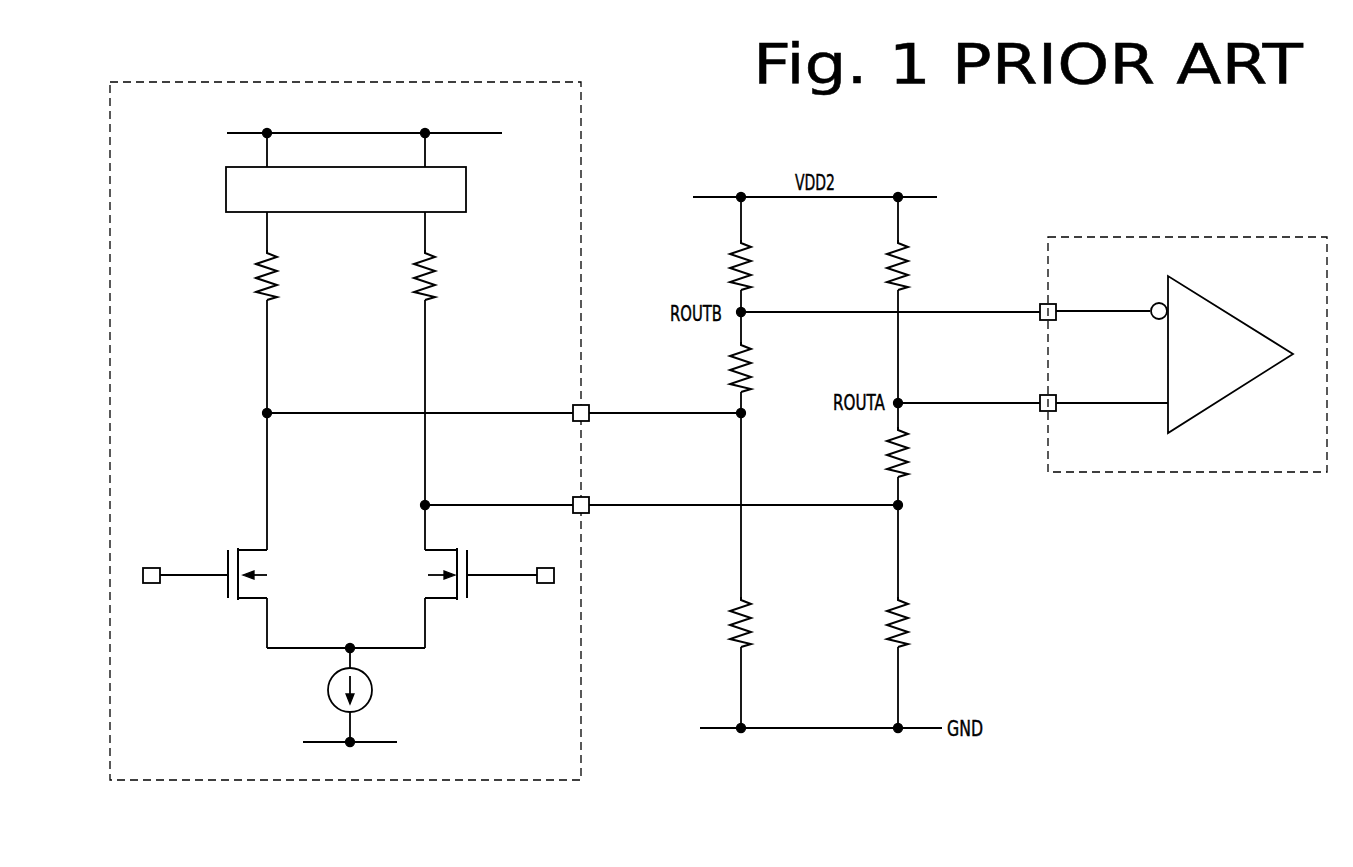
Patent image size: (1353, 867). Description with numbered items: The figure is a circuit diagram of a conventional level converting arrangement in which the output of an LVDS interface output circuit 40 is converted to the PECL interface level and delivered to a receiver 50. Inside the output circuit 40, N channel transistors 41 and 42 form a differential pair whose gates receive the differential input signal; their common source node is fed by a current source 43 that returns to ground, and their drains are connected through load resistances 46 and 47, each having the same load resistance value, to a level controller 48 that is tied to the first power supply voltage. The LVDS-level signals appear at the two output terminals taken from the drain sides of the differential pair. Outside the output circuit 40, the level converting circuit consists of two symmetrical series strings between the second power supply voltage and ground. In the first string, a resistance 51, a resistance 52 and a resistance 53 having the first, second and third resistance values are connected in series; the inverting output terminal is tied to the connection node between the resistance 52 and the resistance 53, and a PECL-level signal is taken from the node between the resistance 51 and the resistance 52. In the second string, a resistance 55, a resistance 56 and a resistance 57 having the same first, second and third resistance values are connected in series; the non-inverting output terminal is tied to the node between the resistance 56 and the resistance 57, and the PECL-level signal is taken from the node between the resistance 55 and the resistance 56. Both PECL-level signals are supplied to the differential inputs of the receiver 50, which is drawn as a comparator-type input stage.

The output circuit 40 is at (582, 122).
The N channel transistor 41 is at (240, 602).
The N channel transistor 42 is at (455, 602).
The current source 43 is at (328, 690).
The load resistance 46 is at (256, 276).
The load resistance 47 is at (438, 276).
The level controller 48 is at (226, 192).
The receiver 50 is at (1170, 237).
The resistance 51 is at (726, 264).
The resistance 52 is at (726, 371).
The resistance 53 is at (726, 622).
The resistance 55 is at (913, 265).
The resistance 56 is at (912, 446).
The resistance 57 is at (913, 625).